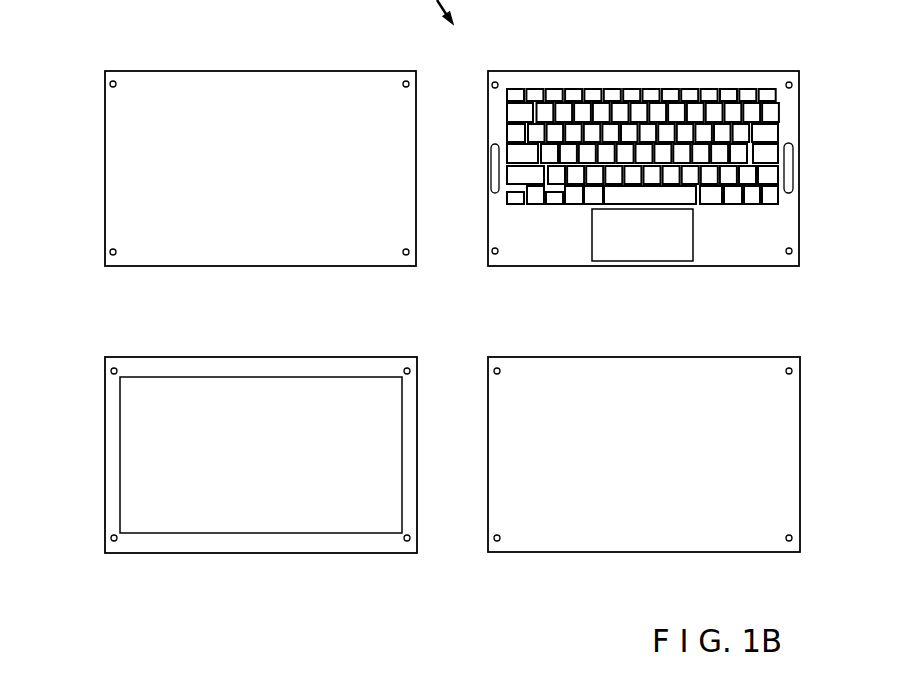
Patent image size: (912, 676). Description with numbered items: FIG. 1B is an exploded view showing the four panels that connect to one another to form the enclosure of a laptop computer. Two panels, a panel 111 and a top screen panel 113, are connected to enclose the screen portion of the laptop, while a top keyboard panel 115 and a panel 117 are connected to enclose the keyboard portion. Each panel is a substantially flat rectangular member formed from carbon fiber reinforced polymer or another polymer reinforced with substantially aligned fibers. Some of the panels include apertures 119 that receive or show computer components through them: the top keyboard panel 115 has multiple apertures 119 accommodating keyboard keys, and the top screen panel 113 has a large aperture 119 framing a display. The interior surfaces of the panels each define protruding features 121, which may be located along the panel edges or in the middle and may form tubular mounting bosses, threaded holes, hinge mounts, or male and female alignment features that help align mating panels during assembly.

The panel 111 is at (236, 103).
The top screen panel 113 is at (232, 367).
The top keyboard panel 115 is at (668, 83).
The panel 117 is at (625, 380).
The aperture 119 is at (779, 115).
The protruding feature 121 is at (110, 84).